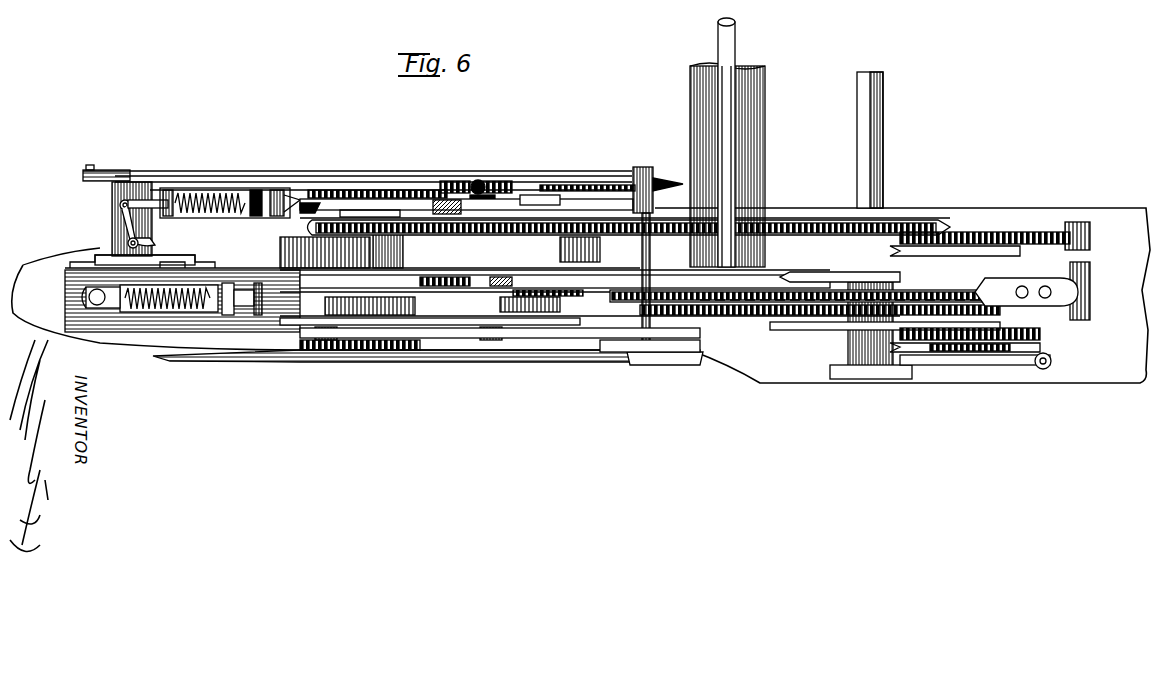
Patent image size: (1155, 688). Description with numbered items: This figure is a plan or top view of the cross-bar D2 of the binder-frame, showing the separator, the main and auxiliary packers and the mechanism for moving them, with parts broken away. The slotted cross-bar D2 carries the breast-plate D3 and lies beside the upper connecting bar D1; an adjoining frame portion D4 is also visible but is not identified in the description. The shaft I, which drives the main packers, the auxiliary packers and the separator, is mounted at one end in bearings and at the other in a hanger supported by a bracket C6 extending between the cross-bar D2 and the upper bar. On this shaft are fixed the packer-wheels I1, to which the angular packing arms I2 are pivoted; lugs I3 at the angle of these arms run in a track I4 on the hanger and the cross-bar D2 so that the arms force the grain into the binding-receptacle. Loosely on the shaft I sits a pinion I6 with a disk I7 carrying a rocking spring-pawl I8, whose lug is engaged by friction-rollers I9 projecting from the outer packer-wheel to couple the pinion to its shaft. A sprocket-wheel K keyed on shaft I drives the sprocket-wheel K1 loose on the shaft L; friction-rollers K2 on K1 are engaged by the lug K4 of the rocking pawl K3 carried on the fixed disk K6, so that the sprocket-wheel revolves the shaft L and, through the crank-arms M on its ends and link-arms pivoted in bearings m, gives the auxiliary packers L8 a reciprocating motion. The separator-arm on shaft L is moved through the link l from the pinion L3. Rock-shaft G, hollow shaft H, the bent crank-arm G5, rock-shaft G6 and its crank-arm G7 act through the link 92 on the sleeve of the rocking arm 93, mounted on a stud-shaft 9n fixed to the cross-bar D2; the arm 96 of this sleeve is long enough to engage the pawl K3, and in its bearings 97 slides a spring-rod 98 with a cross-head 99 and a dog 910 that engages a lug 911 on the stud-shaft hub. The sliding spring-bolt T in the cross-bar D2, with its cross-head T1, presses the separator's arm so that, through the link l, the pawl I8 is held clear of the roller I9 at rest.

The rocking arm 93 is at (100, 178).
The link 92 is at (205, 176).
The lug or projection 911 is at (112, 222).
The pawl or dog 910 is at (118, 208).
The spring-rod 98 is at (153, 200).
The bearings 97 is at (200, 182).
The arm 96 is at (232, 188).
The cross-head 99 is at (286, 188).
The stud-shaft 9n is at (165, 266).
The wheel or disk K6 is at (318, 190).
The shaft L is at (405, 205).
The sprocket-wheel K1 is at (357, 200).
The friction-rollers K2 is at (450, 210).
The rocking pawl K3 is at (313, 205).
The lug K4 is at (442, 203).
The crank-arm M is at (462, 205).
The bearings m is at (527, 200).
The auxiliary packers L8 is at (560, 185).
The sprocket-wheel K is at (928, 210).
The breast-plate D3 is at (828, 242).
The frame part D4 is at (383, 252).
The upper or connecting bar D1 is at (1098, 297).
The cross-bar D2 is at (288, 332).
The sliding spring-bolt T is at (162, 310).
The cross-head T1 is at (250, 318).
The cam or track way I4 is at (840, 367).
The packing arms or fingers I2 is at (478, 290).
The lugs I3 is at (817, 362).
The pinion I6 is at (932, 304).
The disk or plate I7 is at (800, 306).
The packer-wheels I1 is at (1012, 243).
The rocking spring-pawl I8 is at (978, 322).
The friction-rollers I9 is at (924, 370).
The bracket C6 is at (1070, 292).
The hollow shaft H is at (728, 160).
The rock-shaft G is at (737, 48).
The shaft I is at (876, 140).
The crank-arm G7 is at (637, 167).
The rock-shaft G6 is at (642, 252).
The bent crank-arm G5 is at (660, 366).
The pinion L3 is at (637, 340).
The link l is at (600, 283).